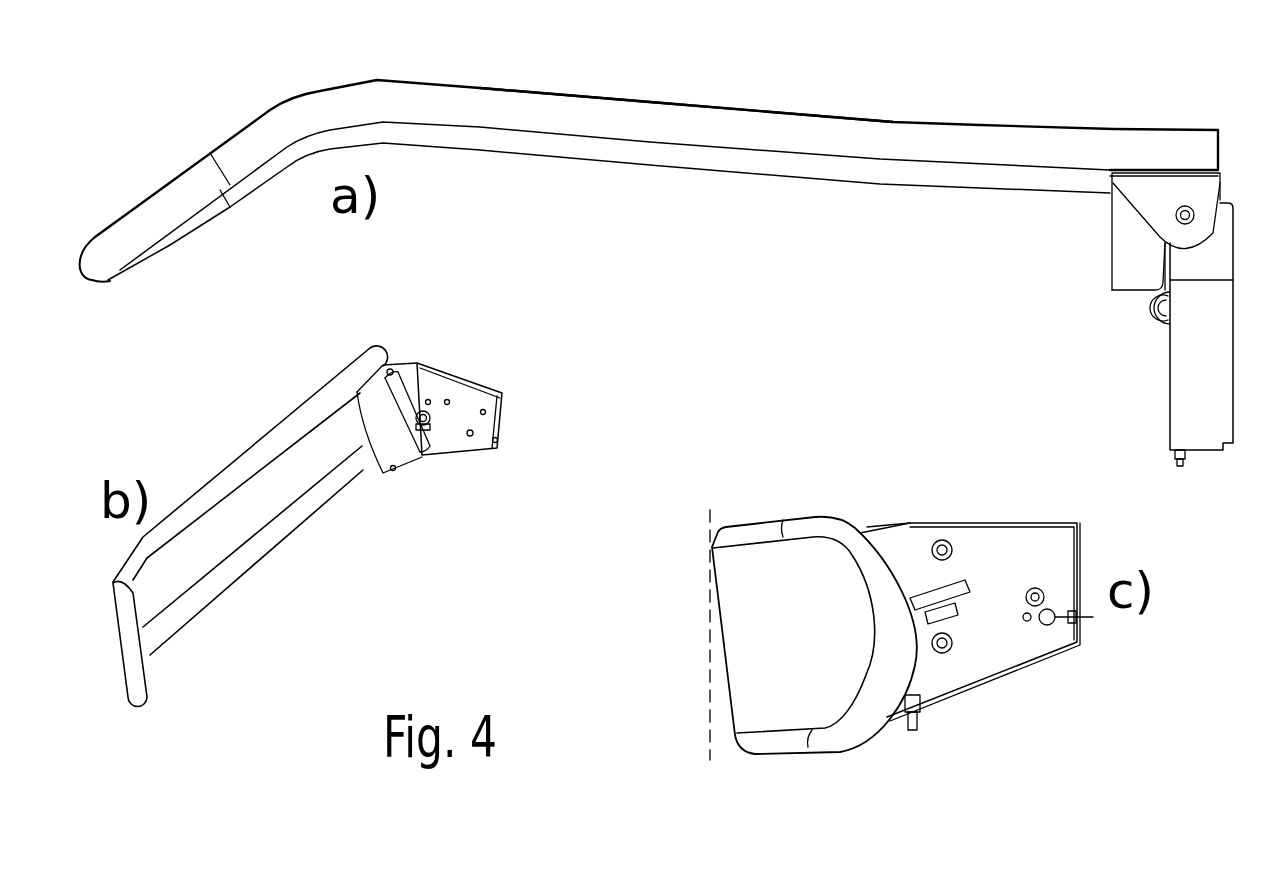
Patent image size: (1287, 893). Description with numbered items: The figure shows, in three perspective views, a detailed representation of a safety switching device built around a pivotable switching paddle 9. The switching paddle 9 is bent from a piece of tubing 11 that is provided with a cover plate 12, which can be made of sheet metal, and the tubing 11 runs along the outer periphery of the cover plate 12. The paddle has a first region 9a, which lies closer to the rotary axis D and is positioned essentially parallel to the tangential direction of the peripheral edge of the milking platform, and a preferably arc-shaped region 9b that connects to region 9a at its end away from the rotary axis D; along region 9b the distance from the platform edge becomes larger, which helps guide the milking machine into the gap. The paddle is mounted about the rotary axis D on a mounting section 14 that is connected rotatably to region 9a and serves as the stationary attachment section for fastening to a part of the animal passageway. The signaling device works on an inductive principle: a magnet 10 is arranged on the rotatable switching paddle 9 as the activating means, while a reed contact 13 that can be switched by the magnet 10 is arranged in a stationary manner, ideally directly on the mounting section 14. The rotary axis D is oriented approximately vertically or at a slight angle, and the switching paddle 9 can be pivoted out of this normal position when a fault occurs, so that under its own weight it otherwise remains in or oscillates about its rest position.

In FIG. 4b, the switching paddle 9 is at (243, 515).
In FIG. 4a, the first region of the switching paddle 9a is at (868, 125).
In FIG. 4b, the first region of the switching paddle 9a is at (250, 563).
In FIG. 4a, the arc-shaped region of the switching paddle 9b is at (180, 170).
In FIG. 4b, the arc-shaped region of the switching paddle 9b is at (150, 692).
In FIG. 4a, the magnet 10 is at (1137, 252).
In FIG. 4b, the magnet 10 is at (385, 413).
In FIG. 4a, the tubing 11 is at (503, 105).
In FIG. 4c, the tubing 11 is at (790, 747).
In FIG. 4a, the cover plate 12 is at (643, 103).
In FIG. 4c, the cover plate 12 is at (747, 632).
In FIG. 4a, the reed contact 13 is at (1143, 310).
In FIG. 4b, the reed contact 13 is at (437, 423).
In FIG. 4a, the mounting section 14 is at (1208, 387).
In FIG. 4b, the mounting section 14 is at (497, 418).
In FIG. 4c, the mounting section 14 is at (982, 648).
In FIG. 4a, the rotary axis D is at (1197, 203).